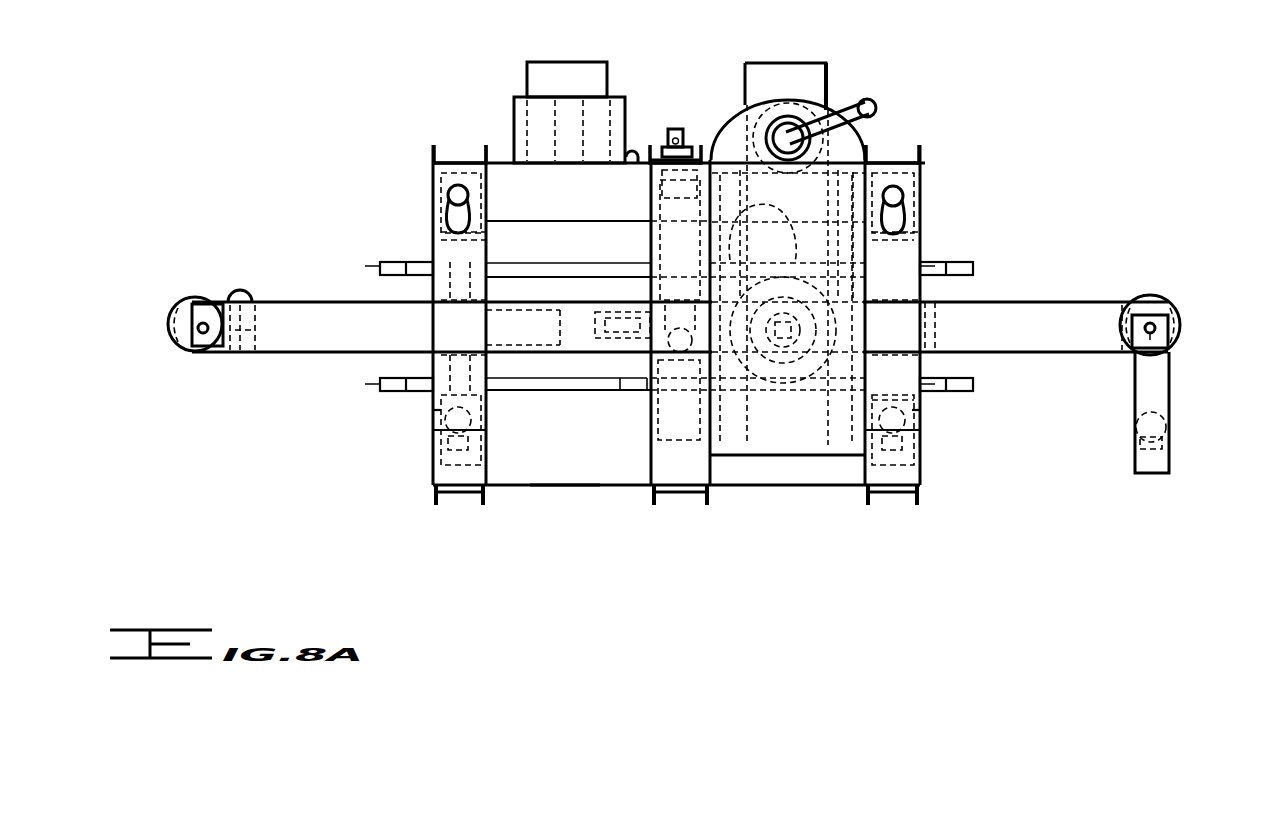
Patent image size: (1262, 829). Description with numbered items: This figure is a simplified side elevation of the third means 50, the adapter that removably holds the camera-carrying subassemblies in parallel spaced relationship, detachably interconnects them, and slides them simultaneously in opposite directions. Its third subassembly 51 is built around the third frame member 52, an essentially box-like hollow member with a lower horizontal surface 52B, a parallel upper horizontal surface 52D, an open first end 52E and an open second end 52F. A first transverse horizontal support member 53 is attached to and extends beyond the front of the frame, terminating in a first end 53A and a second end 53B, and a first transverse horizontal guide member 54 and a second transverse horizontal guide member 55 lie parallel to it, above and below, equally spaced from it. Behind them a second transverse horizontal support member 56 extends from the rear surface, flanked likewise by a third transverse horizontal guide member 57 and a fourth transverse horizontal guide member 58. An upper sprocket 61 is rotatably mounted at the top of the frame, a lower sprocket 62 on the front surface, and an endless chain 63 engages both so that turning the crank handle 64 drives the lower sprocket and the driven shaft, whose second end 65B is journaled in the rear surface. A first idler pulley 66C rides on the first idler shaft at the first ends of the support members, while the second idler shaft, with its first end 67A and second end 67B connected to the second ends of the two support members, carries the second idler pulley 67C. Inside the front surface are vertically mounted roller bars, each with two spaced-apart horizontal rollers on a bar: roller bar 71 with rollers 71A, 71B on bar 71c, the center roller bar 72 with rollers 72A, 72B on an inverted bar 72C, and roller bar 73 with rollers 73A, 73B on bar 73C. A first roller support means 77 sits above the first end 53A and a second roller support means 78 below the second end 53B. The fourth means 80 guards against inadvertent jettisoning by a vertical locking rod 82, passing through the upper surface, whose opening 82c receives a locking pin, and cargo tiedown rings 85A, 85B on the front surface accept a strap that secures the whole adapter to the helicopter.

The third means 50 is at (1070, 56).
The third subassembly 51 is at (930, 171).
The third frame member 52 is at (433, 186).
The lower horizontal surface 52B is at (565, 487).
The upper horizontal surface 52D is at (620, 163).
The open first end 52E is at (433, 428).
The open second end 52F is at (927, 410).
The first transverse horizontal support member 53 is at (273, 352).
The first end of first transverse horizontal support member 53A is at (172, 338).
The second end of first transverse horizontal support member 53B is at (1167, 353).
The first transverse horizontal guide member 54 is at (527, 272).
The second transverse horizontal guide member 55 is at (510, 386).
The second transverse horizontal support member 56 is at (313, 273).
The third transverse horizontal guide member 57 is at (380, 268).
The fourth transverse horizontal guide member 58 is at (377, 397).
The upper sprocket 61 is at (802, 124).
The lower sprocket 62 is at (753, 280).
The endless chain 63 is at (826, 173).
The crank handle 64 is at (862, 106).
The second end of driven shaft 65B is at (780, 337).
The first idler pulley 66C is at (168, 308).
The first end of second idler shaft 67A is at (197, 348).
The second end of second idler shaft 67B is at (1133, 355).
The second idler pulley 67C is at (1203, 280).
The roller bar 71 is at (455, 352).
The roller 71A is at (440, 292).
The roller 71B is at (490, 413).
The bar 71c is at (447, 242).
The roller bar 72 is at (652, 385).
The roller 72A is at (660, 350).
The roller 72B is at (660, 232).
The bar 72C is at (655, 265).
The roller bar 73 is at (933, 367).
The roller 73A is at (930, 303).
The roller 73B is at (927, 433).
The bar 73C is at (922, 250).
The first roller support means 77 is at (240, 294).
The second roller support means 78 is at (1177, 408).
The fourth means 80 is at (694, 80).
The locking rod 82 is at (688, 133).
The opening 82c is at (668, 150).
The cargo tiedown ring 85A is at (482, 210).
The cargo tiedown ring 85B is at (918, 206).